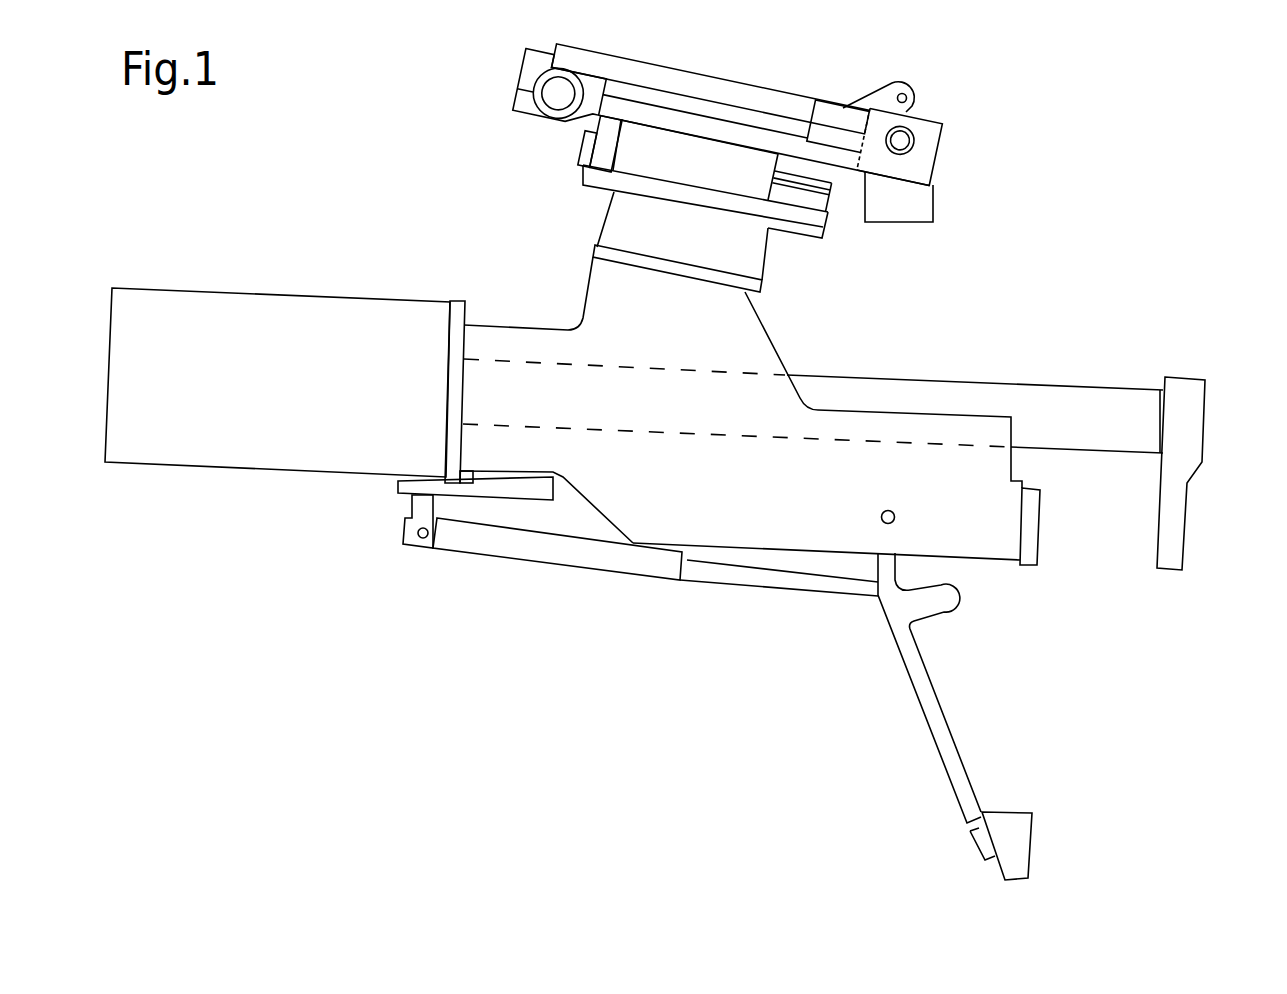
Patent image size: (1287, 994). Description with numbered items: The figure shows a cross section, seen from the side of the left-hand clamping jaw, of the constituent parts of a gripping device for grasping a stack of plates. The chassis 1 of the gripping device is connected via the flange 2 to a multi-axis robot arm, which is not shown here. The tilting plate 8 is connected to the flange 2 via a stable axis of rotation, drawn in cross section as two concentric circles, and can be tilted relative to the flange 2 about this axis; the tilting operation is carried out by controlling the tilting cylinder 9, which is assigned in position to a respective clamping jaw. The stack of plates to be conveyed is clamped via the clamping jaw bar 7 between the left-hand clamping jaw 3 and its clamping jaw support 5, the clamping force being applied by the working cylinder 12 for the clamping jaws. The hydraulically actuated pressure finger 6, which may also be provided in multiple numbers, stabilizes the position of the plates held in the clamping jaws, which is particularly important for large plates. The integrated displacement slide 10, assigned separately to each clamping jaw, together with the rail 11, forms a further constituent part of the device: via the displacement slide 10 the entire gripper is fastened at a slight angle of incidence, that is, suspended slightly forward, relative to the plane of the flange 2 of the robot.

The chassis 1 is at (777, 550).
The flange 2 is at (766, 82).
The left-hand clamping jaw 3 is at (1192, 502).
The clamping jaw support 5 is at (1040, 548).
The pressure finger 6 is at (962, 758).
The clamping jaw bar 7 is at (846, 369).
The tilting plate 8 is at (893, 182).
The tilting cylinder 9 is at (940, 170).
The displacement slide 10 is at (646, 182).
The rail 11 is at (580, 140).
The working cylinder for clamping jaws 12 is at (298, 478).